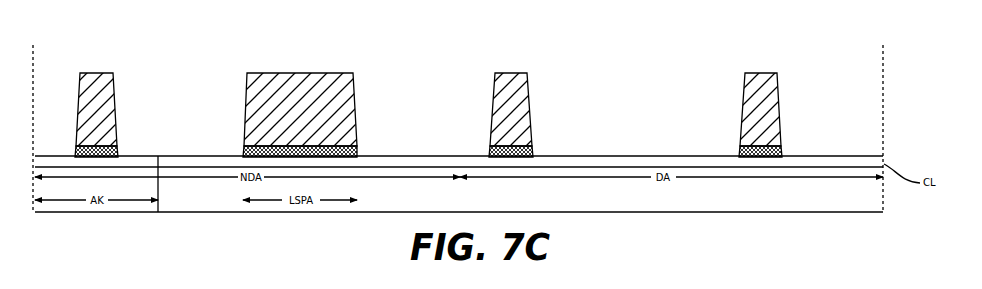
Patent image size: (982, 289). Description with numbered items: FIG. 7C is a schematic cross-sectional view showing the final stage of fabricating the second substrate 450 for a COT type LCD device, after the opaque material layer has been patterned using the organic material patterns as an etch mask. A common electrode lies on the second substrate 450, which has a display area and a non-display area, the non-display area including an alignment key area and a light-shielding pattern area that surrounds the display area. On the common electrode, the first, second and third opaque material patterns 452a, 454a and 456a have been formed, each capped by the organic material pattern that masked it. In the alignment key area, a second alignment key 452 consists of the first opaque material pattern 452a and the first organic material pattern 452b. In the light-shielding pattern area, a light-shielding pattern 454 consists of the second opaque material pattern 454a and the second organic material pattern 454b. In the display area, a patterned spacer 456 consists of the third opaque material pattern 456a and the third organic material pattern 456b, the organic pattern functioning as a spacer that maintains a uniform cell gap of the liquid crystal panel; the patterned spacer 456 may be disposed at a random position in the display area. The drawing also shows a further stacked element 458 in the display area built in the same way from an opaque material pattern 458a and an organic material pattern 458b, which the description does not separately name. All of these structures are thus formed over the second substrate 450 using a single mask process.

The second substrate 450 is at (459, 180).
The second alignment key 452 is at (148, 109).
The first opaque material pattern 452a is at (118, 153).
The first organic material pattern 452b is at (113, 73).
The light-shielding pattern 454 is at (353, 109).
The second opaque material pattern 454a is at (357, 153).
The second organic material pattern 454b is at (353, 73).
The patterned spacer 456 is at (561, 109).
The third opaque material pattern 456a is at (533, 153).
The third organic material pattern 456b is at (527, 73).
The bank 458 is at (806, 109).
The lower portion of bank 458a is at (782, 153).
The upper portion of bank 458b is at (777, 73).